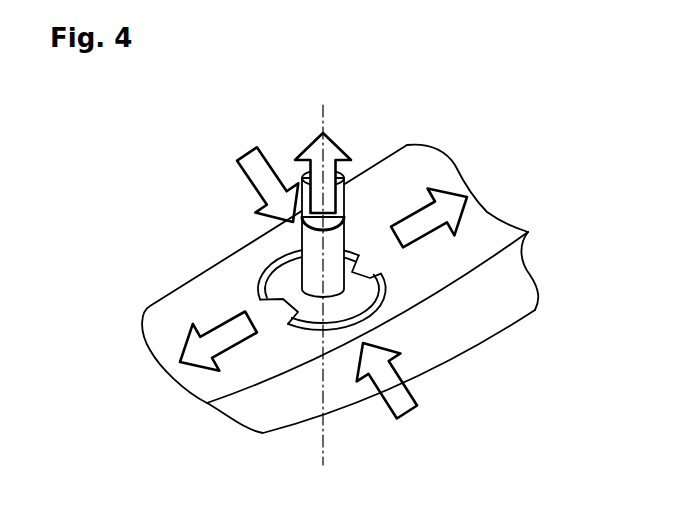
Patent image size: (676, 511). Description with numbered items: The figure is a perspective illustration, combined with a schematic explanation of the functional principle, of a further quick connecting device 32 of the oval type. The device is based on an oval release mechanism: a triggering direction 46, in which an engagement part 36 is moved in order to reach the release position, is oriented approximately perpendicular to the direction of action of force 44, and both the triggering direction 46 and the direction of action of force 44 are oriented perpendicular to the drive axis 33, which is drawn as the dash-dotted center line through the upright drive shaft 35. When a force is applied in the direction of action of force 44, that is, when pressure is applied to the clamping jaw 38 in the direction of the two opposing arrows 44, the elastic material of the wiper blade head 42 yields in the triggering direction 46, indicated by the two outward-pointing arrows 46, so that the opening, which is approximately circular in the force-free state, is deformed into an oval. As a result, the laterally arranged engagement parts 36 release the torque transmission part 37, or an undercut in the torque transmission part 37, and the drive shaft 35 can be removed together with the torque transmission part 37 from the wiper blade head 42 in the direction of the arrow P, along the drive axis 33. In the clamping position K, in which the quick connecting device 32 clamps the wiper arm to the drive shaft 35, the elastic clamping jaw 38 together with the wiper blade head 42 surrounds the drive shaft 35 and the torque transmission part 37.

The quick connecting device 32 is at (474, 108).
The drive axis 33 is at (326, 440).
The drive shaft 35 is at (345, 238).
The engagement part 36 is at (285, 283).
The torque transmission part 37 is at (272, 269).
The clamping jaw 38 is at (442, 348).
The wiper blade head 42 is at (484, 232).
The direction of action of force 44 is at (253, 156).
The triggering direction 46 is at (197, 362).
The direction of arrow P is at (313, 151).
The clamping position K is at (122, 333).